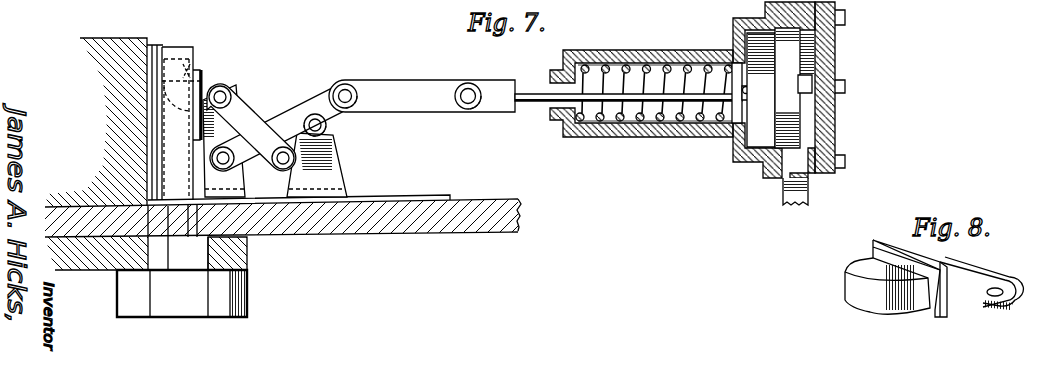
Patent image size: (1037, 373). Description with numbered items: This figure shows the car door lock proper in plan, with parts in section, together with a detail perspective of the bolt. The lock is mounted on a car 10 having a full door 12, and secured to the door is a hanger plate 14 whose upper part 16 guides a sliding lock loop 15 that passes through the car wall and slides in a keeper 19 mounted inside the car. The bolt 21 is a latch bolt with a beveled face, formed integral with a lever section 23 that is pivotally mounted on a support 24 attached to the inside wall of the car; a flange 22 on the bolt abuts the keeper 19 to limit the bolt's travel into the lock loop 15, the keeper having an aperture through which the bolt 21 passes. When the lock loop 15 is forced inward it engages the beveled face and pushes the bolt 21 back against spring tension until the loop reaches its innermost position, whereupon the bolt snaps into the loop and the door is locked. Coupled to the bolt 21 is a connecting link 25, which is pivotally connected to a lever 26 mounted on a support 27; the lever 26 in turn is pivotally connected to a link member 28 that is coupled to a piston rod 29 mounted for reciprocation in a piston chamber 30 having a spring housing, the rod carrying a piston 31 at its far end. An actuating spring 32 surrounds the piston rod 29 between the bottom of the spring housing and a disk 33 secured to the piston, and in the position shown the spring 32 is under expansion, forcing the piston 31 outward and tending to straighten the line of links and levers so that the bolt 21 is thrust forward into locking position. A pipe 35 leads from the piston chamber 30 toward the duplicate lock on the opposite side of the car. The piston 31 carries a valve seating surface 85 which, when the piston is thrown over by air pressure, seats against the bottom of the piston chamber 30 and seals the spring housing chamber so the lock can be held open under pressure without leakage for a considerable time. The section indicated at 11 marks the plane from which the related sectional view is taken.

In FIG. 7, the car 10 is at (453, 230).
In FIG. 7, the section line 11 is at (147, 53).
In FIG. 7, the full door 12 is at (102, 252).
In FIG. 7, the hanger plate 14 is at (249, 298).
In FIG. 7, the lock loop 15 is at (182, 227).
In FIG. 7, the upper part of the hanger plate 16 is at (193, 298).
In FIG. 7, the keeper 19 is at (172, 52).
In FIG. 7, the bolt 21 is at (195, 56).
In FIG. 8, the bolt 21 is at (870, 297).
In FIG. 7, the flange 22 is at (202, 80).
In FIG. 8, the flange 22 is at (935, 310).
In FIG. 7, the lever section 23 is at (241, 118).
In FIG. 8, the lever section 23 is at (983, 280).
In FIG. 7, the support 24 is at (230, 183).
In FIG. 7, the connecting link 25 is at (264, 127).
In FIG. 7, the lever 26 is at (338, 115).
In FIG. 7, the support 27 is at (333, 171).
In FIG. 7, the link member 28 is at (440, 90).
In FIG. 7, the piston rod 29 is at (527, 93).
In FIG. 7, the piston chamber 30 is at (753, 160).
In FIG. 7, the piston 31 is at (790, 60).
In FIG. 7, the actuating spring 32 is at (620, 124).
In FIG. 7, the disk 33 is at (733, 61).
In FIG. 7, the pipe 35 is at (802, 193).
In FIG. 7, the valve seating surface 85 is at (770, 124).